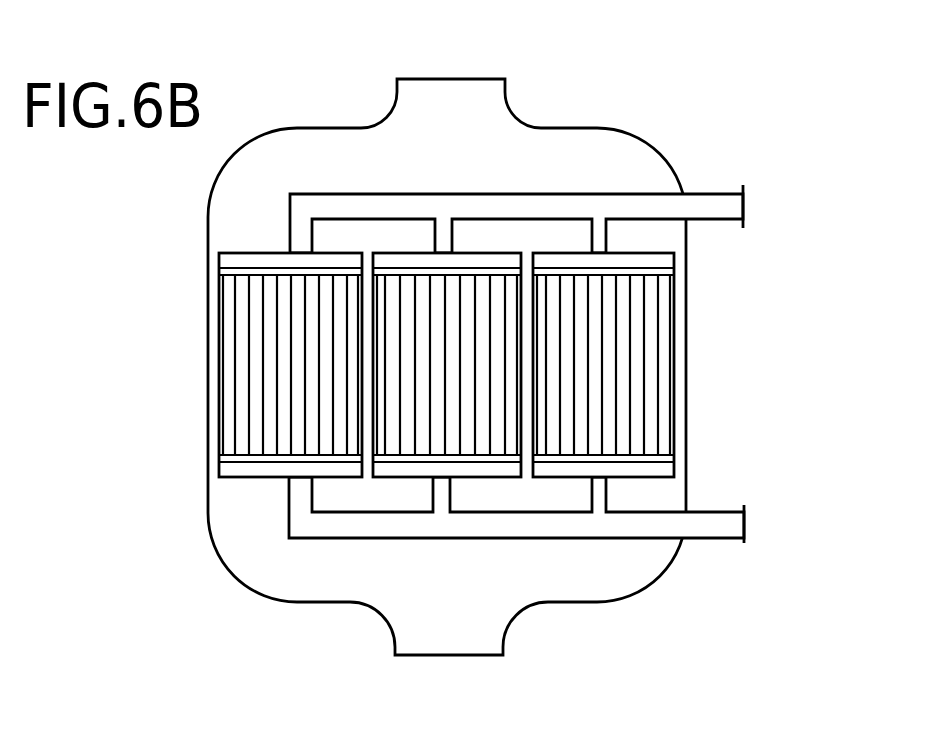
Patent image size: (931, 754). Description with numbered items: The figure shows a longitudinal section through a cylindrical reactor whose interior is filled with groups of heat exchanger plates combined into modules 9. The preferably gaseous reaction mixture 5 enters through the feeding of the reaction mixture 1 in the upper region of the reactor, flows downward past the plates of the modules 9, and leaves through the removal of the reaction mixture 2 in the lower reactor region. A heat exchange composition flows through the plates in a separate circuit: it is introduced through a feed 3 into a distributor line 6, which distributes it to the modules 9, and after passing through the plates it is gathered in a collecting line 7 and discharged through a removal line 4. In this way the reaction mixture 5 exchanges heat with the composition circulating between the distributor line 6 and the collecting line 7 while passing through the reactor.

The feeding of the reaction mixture 1 is at (455, 23).
The removal of the reaction mixture 2 is at (452, 667).
The feed 3 is at (749, 525).
The removal line 4 is at (806, 204).
The reaction mixture 5 is at (632, 385).
The distributor line 6 is at (523, 520).
The collecting line 7 is at (557, 205).
The modules 9 is at (517, 365).